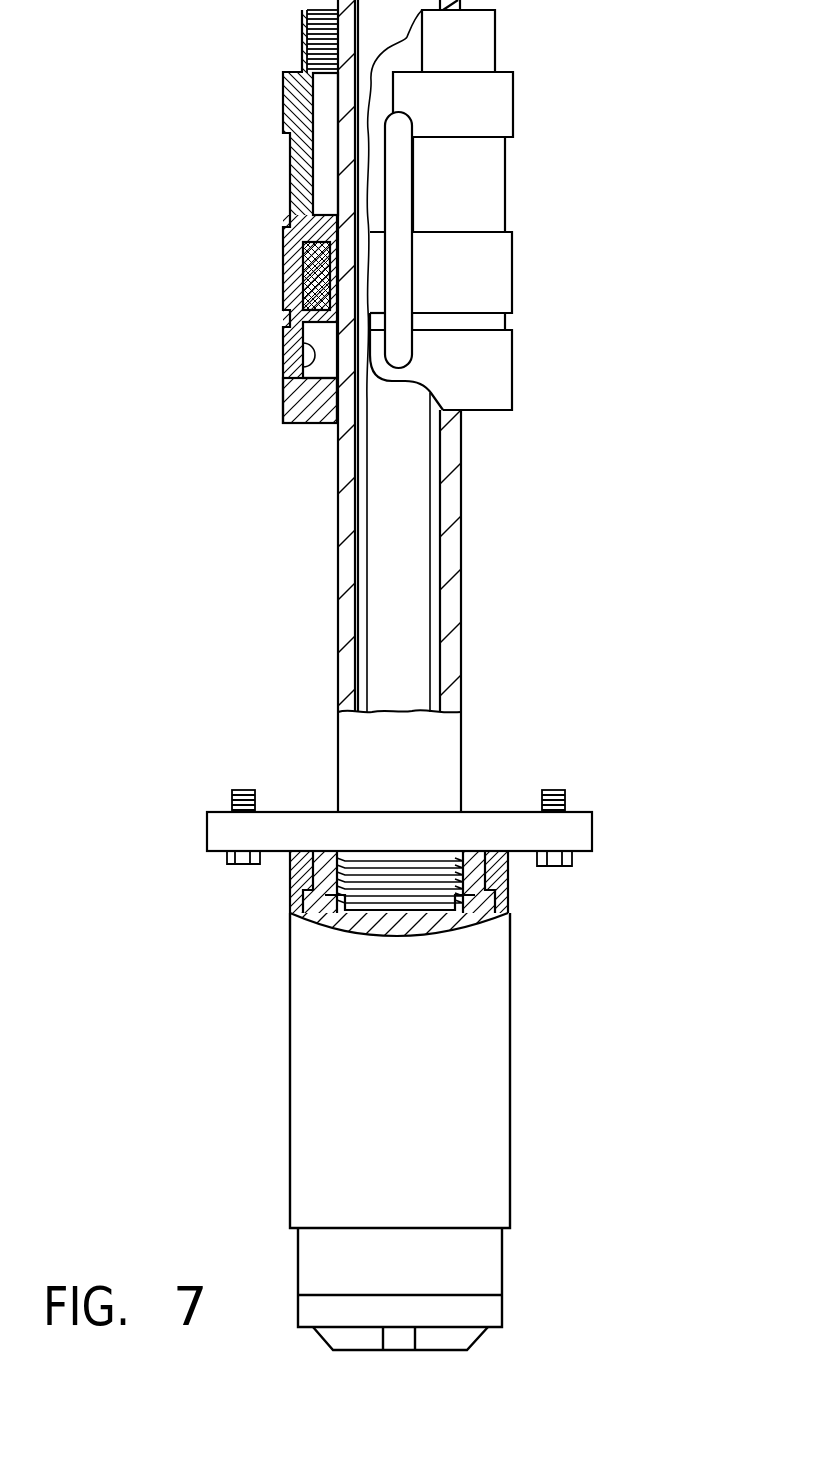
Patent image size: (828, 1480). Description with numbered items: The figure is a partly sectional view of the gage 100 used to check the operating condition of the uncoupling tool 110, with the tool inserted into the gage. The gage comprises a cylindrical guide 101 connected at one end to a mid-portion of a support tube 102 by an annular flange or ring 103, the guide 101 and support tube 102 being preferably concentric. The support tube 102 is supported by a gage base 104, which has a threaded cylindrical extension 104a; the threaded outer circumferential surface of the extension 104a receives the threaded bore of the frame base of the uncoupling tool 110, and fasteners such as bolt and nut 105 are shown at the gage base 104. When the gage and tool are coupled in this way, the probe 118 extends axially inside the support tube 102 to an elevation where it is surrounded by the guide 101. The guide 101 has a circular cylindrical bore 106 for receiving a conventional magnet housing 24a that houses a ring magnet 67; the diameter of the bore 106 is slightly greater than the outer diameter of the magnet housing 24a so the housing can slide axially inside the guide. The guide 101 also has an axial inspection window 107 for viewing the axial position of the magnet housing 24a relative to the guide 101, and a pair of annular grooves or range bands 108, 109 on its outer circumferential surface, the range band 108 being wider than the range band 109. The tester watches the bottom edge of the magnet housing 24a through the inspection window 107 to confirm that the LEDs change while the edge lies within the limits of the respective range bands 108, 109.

The gage 100 is at (218, 673).
The magnet housing 24a is at (305, 180).
The ring magnet 67 is at (300, 256).
The circular cylindrical bore 106 is at (303, 356).
The annular flange or ring 103 is at (305, 428).
The range band 108 is at (505, 187).
The axial inspection window 107 is at (413, 260).
The range band 109 is at (508, 322).
The cylindrical guide 101 is at (512, 385).
The probe 118 is at (430, 513).
The support tube 102 is at (461, 605).
The gage base 104 is at (592, 828).
The threaded cylindrical extension 104a is at (508, 877).
The bolt and nut 105 is at (242, 865).
The uncoupling tool 110 is at (538, 1093).